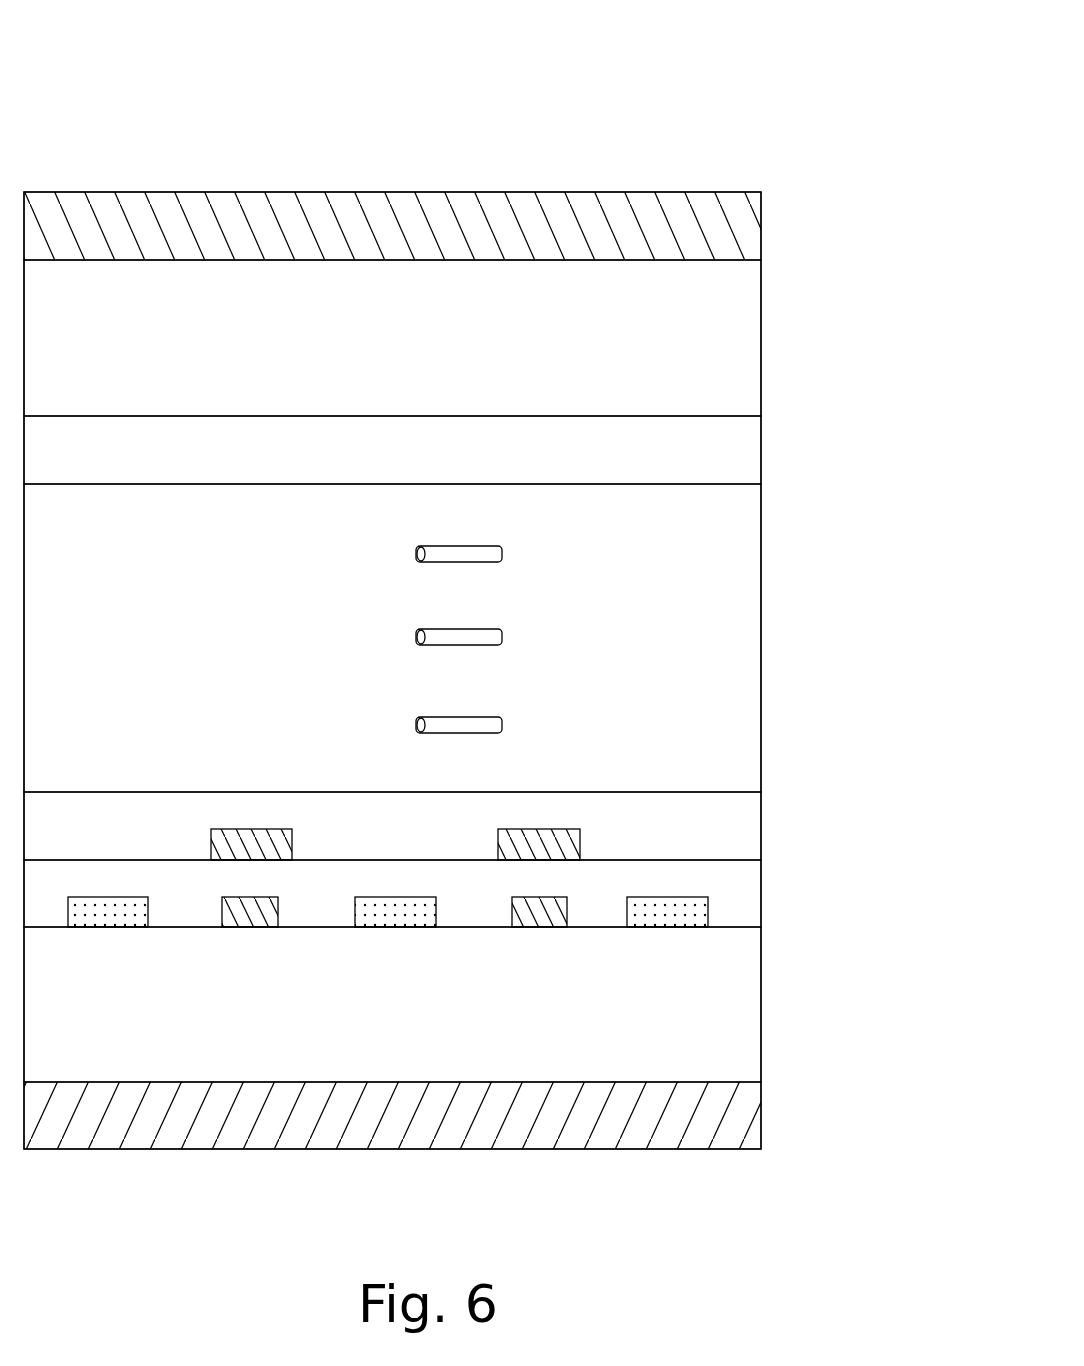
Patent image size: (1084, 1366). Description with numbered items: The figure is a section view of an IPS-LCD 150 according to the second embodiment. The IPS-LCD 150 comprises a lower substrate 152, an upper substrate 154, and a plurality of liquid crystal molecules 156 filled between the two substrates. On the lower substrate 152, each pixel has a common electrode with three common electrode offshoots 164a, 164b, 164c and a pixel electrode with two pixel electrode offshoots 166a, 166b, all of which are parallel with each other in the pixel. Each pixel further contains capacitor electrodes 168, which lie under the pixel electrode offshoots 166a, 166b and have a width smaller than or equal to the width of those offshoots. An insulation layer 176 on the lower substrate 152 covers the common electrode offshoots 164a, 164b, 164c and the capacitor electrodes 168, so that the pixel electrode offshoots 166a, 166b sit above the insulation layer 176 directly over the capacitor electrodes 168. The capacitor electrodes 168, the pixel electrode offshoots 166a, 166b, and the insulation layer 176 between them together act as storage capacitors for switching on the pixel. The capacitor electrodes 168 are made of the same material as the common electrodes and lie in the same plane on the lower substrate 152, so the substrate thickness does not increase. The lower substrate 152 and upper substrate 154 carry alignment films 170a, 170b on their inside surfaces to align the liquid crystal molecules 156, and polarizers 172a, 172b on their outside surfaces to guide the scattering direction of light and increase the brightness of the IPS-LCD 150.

The IPS-LCD 150 is at (608, 86).
The lower substrate 152 is at (735, 1020).
The upper substrate 154 is at (735, 357).
The liquid crystal molecules 156 is at (503, 558).
The common electrode offshoot 164a is at (102, 915).
The common electrode offshoot 164b is at (390, 915).
The common electrode offshoot 164c is at (670, 915).
The pixel electrode offshoot 166a is at (212, 845).
The pixel electrode offshoot 166b is at (499, 845).
The capacitor electrode 168 is at (265, 915).
The alignment film 170a is at (735, 832).
The alignment film 170b is at (723, 453).
The polarizer 172a is at (735, 1122).
The polarizer 172b is at (745, 232).
The insulation layer 176 is at (735, 907).